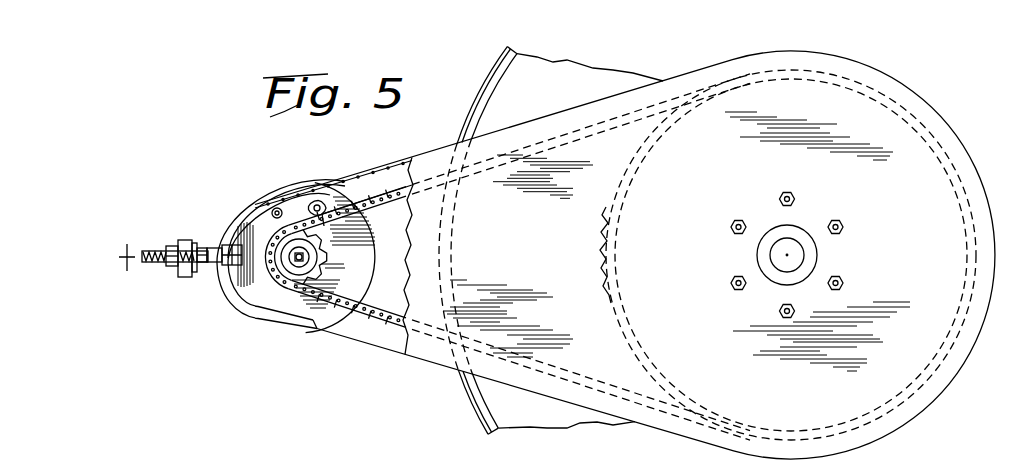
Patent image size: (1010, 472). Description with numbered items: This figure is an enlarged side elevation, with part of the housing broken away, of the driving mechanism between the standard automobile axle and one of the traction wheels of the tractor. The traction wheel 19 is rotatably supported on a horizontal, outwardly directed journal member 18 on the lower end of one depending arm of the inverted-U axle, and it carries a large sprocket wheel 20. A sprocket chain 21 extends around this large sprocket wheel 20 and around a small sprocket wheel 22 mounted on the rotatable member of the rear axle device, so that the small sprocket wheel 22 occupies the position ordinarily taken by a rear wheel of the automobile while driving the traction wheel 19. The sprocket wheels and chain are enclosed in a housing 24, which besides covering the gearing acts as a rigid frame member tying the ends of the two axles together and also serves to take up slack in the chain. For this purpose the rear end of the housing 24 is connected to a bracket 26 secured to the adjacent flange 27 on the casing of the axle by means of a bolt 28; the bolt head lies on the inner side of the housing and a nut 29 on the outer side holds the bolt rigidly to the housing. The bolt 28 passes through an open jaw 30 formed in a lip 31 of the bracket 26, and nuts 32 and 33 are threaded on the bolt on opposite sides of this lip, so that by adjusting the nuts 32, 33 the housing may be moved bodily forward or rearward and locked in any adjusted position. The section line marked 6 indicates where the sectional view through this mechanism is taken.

The frame member 6 is at (112, 256).
The journal member 18 is at (789, 243).
The traction wheel 19 is at (551, 241).
The large sprocket wheel 20 is at (622, 252).
The sprocket chain 21 is at (387, 310).
The small sprocket wheel 22 is at (317, 258).
The housing 24 is at (382, 165).
The bracket 26 is at (239, 200).
The flange 27 is at (362, 236).
The bolt 28 is at (152, 263).
The nut 29 is at (218, 247).
The open jaw 30 is at (185, 242).
The lip 31 is at (187, 278).
The nut 32 is at (173, 266).
The nut 33 is at (205, 265).